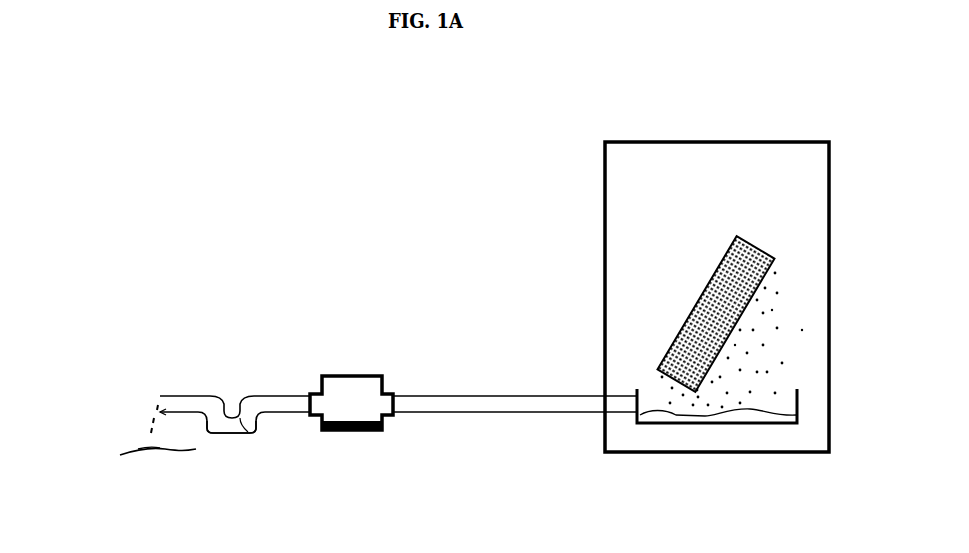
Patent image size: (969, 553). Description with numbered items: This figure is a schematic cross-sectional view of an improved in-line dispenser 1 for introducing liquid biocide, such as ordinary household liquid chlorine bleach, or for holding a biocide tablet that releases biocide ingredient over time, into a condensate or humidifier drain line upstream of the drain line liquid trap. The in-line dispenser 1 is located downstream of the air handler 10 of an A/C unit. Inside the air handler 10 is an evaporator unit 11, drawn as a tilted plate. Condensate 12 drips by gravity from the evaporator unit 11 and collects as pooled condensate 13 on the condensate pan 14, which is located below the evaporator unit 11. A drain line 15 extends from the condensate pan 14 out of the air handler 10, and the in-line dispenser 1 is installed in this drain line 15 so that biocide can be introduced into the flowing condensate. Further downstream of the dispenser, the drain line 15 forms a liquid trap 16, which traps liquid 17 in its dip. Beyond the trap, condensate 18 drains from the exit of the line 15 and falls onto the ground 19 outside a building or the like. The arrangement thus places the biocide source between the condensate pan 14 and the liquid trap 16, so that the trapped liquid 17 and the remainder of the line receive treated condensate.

The in-line dispenser 1 is at (352, 388).
The air handler 10 is at (693, 142).
The evaporator unit 11 is at (715, 287).
The condensate 12 is at (863, 247).
The pooled condensate 13 is at (760, 465).
The condensate pan 14 is at (642, 467).
The drain line 15 is at (527, 396).
The liquid trap 16 is at (309, 478).
The liquid 17 is at (225, 465).
The condensate 18 is at (145, 425).
The ground 19 is at (150, 448).